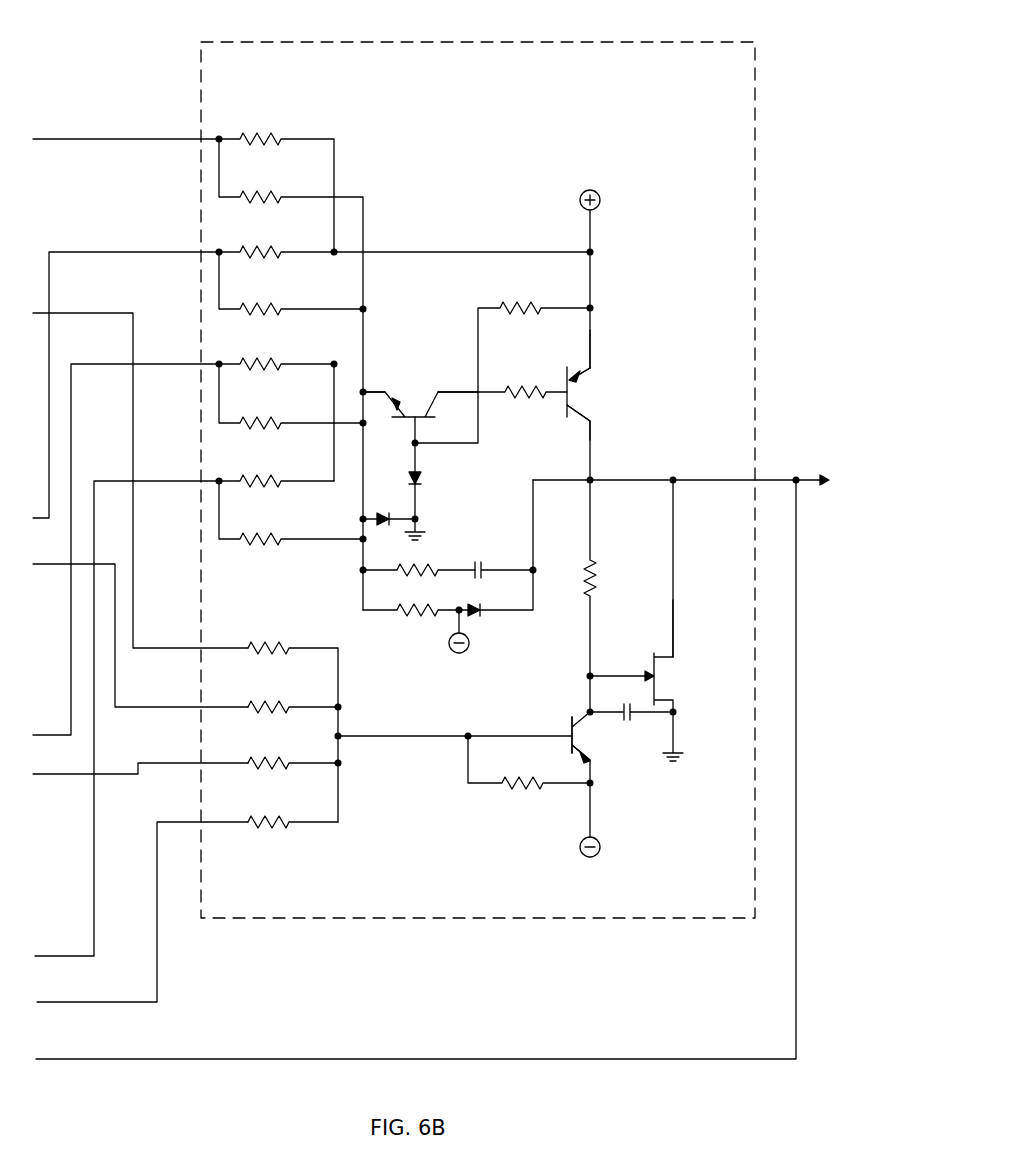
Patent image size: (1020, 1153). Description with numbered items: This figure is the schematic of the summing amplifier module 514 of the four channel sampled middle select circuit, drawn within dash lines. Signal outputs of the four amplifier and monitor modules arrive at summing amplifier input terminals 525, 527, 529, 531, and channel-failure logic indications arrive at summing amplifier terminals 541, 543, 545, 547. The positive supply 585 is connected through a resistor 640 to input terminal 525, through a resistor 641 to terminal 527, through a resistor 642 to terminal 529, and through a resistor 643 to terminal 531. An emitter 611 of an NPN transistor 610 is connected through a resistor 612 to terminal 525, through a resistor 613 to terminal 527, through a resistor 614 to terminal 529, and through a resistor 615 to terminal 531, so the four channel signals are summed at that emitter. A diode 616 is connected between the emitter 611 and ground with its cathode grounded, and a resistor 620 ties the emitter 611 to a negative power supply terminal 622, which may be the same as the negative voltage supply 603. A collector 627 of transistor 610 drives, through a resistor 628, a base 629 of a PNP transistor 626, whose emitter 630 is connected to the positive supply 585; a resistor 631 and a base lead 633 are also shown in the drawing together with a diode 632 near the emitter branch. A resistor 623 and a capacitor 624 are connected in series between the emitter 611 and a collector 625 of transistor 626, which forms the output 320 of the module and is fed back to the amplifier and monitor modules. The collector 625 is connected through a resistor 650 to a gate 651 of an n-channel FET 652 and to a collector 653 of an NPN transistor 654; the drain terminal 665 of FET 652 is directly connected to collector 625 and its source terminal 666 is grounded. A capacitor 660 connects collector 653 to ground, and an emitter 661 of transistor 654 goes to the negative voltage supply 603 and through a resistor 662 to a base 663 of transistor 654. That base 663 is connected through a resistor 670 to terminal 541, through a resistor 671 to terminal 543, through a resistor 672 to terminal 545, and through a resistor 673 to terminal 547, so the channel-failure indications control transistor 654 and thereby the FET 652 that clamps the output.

The summing amplifier module 514 is at (712, 42).
The summing amplifier input terminal 525 is at (197, 138).
The summing amplifier terminal 527 is at (197, 249).
The summing amplifier input terminal 529 is at (197, 361).
The summing amplifier input terminal 531 is at (197, 479).
The summing amplifier terminal 541 is at (197, 645).
The summing amplifier terminal 543 is at (197, 705).
The summing amplifier terminal 545 is at (197, 761).
The summing amplifier terminal 547 is at (197, 821).
The resistor 640 is at (259, 137).
The resistor 612 is at (262, 192).
The resistor 641 is at (262, 248).
The resistor 613 is at (262, 303).
The resistor 642 is at (262, 357).
The resistor 614 is at (262, 417).
The resistor 643 is at (262, 473).
The resistor 615 is at (262, 533).
The resistor 670 is at (264, 642).
The resistor 671 is at (264, 700).
The resistor 672 is at (264, 758).
The resistor 673 is at (264, 815).
The positive supply 585 is at (589, 190).
The resistor 631 is at (519, 302).
The NPN transistor 610 is at (432, 402).
The emitter 611 is at (384, 393).
The collector 627 is at (454, 392).
The base 633 is at (419, 433).
The resistor 628 is at (514, 394).
The PNP transistor 626 is at (615, 403).
The base 629 is at (566, 380).
The emitter 630 is at (594, 362).
The collector 625 is at (585, 416).
The diode 632 is at (422, 476).
The diode 616 is at (398, 518).
The resistor 623 is at (410, 574).
The capacitor 624 is at (481, 565).
The resistor 620 is at (405, 612).
The negative power supply terminal 622 is at (470, 645).
The output 320 is at (814, 480).
The resistor 650 is at (598, 577).
The n-channel FET 652 is at (700, 690).
The gate 651 is at (646, 674).
The drain terminal 665 is at (675, 636).
The source terminal 666 is at (677, 714).
The capacitor 660 is at (629, 717).
The NPN transistor 654 is at (618, 748).
The collector 653 is at (589, 710).
The base 663 is at (567, 731).
The emitter 661 is at (591, 763).
The resistor 662 is at (522, 789).
The negative voltage supply 603 is at (600, 842).